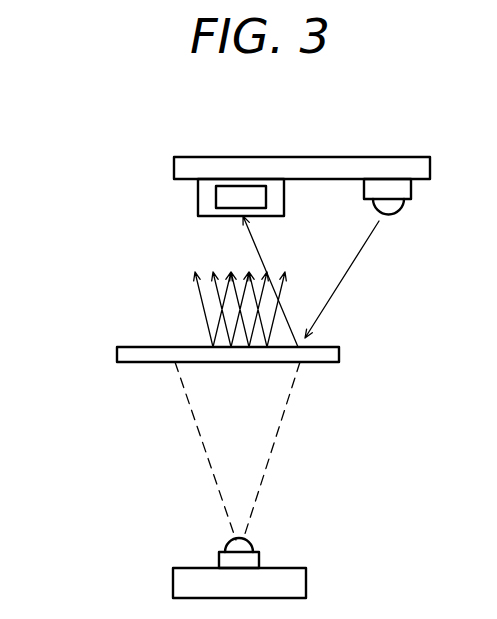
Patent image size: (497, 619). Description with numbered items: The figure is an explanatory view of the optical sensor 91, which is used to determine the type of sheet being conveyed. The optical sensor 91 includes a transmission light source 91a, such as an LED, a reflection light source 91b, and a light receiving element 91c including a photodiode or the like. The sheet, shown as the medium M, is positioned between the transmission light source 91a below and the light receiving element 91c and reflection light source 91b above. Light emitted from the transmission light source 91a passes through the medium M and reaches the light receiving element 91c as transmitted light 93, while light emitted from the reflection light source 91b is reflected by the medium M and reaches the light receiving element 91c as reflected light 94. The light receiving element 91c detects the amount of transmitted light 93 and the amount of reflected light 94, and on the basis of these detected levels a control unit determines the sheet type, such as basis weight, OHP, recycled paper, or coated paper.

The optical sensor 91 is at (89, 166).
The transmission light source 91a is at (251, 542).
The reflection light source 91b is at (397, 213).
The light receiving element 91c is at (225, 216).
The transmitted light 93 is at (205, 312).
The reflected light 94 is at (255, 247).
The medium M is at (339, 352).